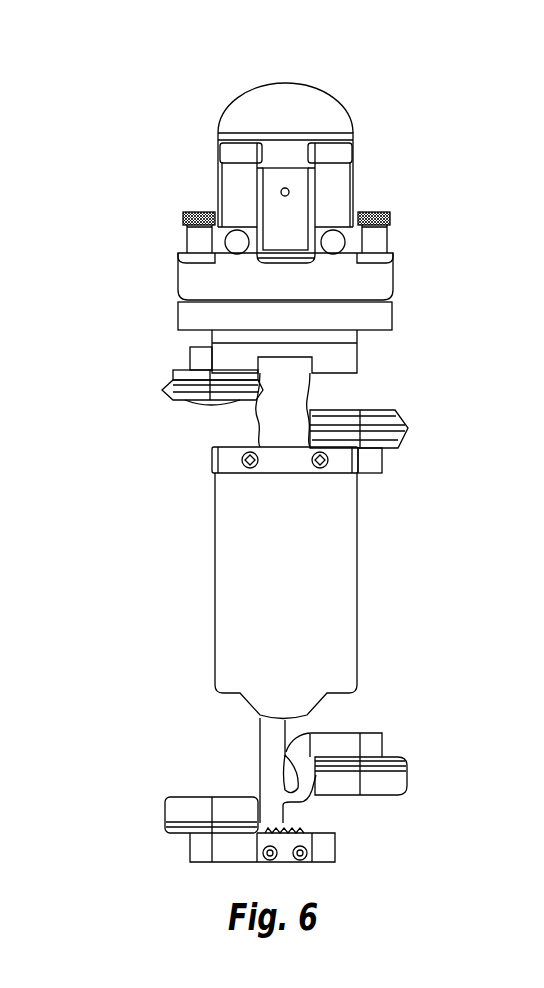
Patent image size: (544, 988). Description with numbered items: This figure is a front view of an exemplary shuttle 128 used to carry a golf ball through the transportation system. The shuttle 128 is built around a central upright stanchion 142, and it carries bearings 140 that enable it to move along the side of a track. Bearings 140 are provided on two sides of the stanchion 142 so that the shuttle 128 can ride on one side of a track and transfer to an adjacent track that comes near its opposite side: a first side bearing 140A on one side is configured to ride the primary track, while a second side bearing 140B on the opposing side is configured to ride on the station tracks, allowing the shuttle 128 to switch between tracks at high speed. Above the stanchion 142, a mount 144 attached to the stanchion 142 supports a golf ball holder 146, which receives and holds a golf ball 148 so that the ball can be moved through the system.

The shuttle 128 is at (110, 477).
The bearings 140 is at (170, 405).
The first side bearing 140A is at (163, 742).
The second side bearing 140B is at (404, 701).
The stanchion 142 is at (357, 577).
The mount 144 is at (358, 357).
The golf ball holder 146 is at (150, 222).
The golf ball 148 is at (290, 103).